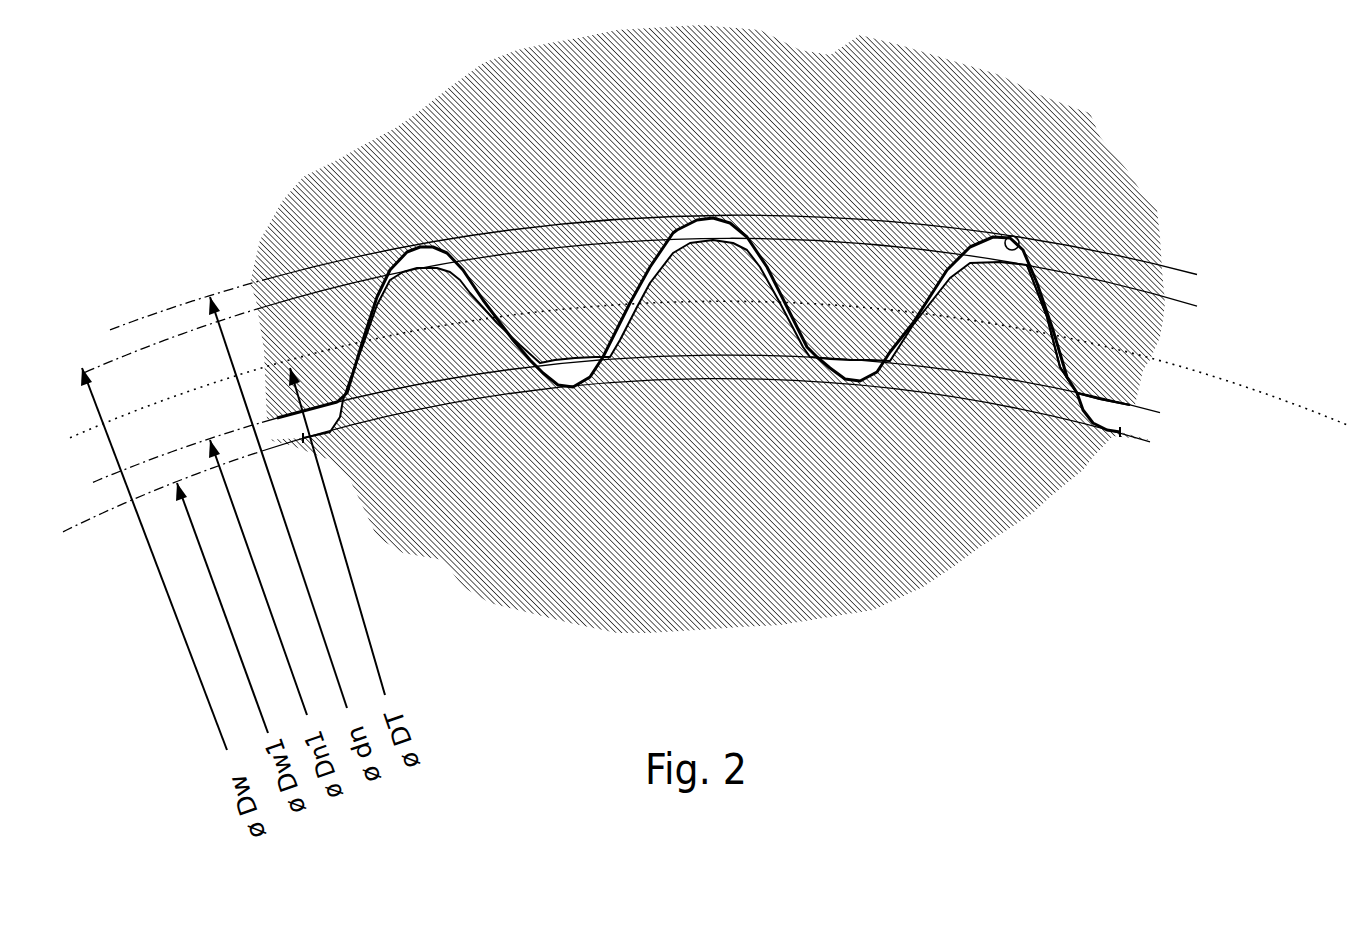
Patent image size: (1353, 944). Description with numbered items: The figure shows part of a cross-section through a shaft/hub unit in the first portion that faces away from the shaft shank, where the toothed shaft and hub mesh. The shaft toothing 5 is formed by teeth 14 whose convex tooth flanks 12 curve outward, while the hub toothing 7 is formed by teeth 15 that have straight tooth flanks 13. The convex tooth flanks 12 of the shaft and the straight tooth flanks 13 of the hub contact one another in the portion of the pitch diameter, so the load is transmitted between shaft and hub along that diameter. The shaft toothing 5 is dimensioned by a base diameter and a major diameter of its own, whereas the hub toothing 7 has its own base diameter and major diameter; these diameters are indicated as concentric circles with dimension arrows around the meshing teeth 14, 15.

The shaft toothing 5 is at (960, 478).
The hub toothing 7 is at (942, 148).
The convex tooth flanks 12 is at (1040, 287).
The straight tooth flanks 13 is at (1010, 240).
The teeth 14 is at (997, 357).
The teeth 15 is at (860, 262).